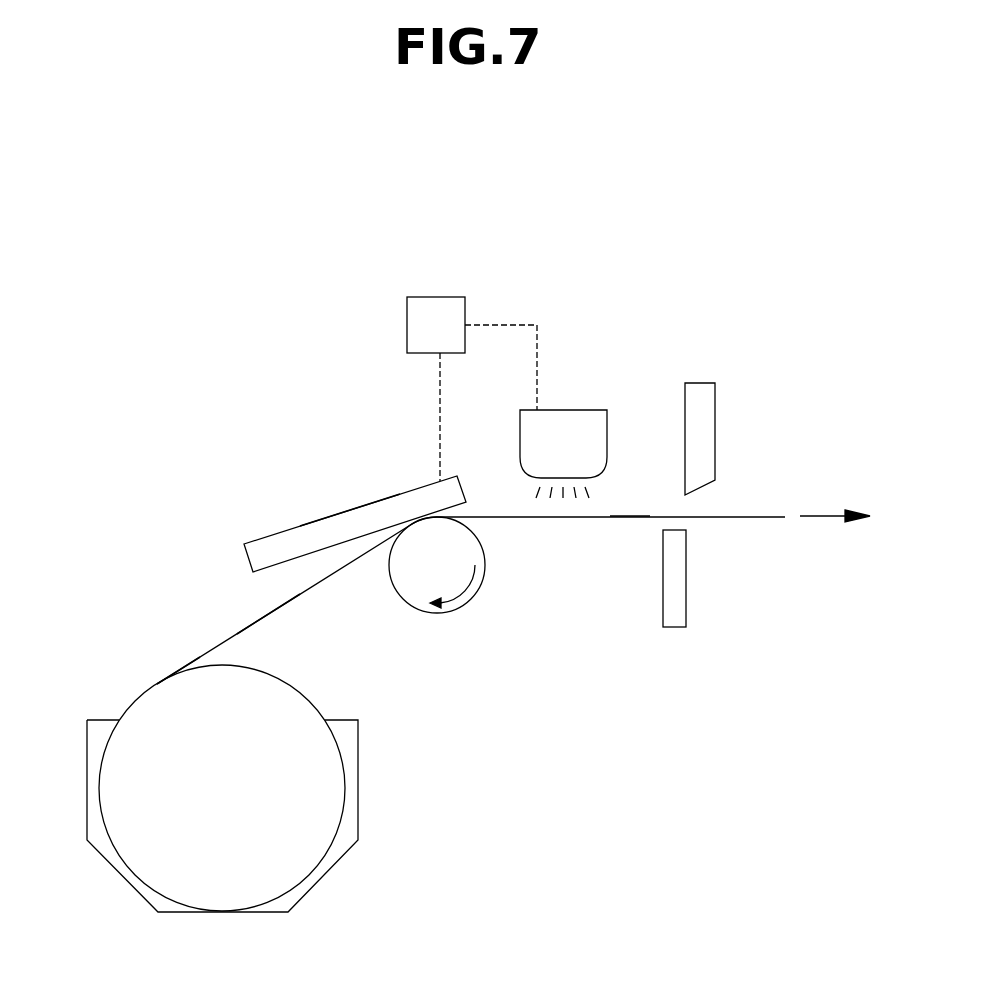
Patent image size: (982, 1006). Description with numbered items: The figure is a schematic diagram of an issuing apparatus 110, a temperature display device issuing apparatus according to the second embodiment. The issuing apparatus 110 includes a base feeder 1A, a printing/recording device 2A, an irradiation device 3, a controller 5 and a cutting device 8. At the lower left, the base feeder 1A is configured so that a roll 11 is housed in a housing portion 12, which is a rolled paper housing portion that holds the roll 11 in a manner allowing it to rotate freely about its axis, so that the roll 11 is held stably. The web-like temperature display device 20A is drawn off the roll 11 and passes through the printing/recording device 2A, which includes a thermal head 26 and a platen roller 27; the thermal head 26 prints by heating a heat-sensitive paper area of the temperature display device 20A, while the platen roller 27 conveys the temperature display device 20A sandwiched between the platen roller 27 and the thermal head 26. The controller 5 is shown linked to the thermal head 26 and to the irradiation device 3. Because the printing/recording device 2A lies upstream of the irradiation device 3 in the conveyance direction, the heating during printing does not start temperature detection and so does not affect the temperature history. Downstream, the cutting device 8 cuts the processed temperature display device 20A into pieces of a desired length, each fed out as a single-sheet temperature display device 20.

The issuing apparatus 110 is at (747, 330).
The controller 5 is at (465, 308).
The irradiation device 3 is at (580, 407).
The cutting device 8 is at (717, 413).
The temperature display device 20 is at (743, 515).
The temperature display device 20A is at (610, 517).
The thermal head 26 is at (407, 490).
The printing/recording device 2A is at (363, 507).
The platen roller 27 is at (477, 595).
The roll 11 is at (127, 710).
The base feeder 1A is at (137, 682).
The housing portion 12 is at (360, 750).